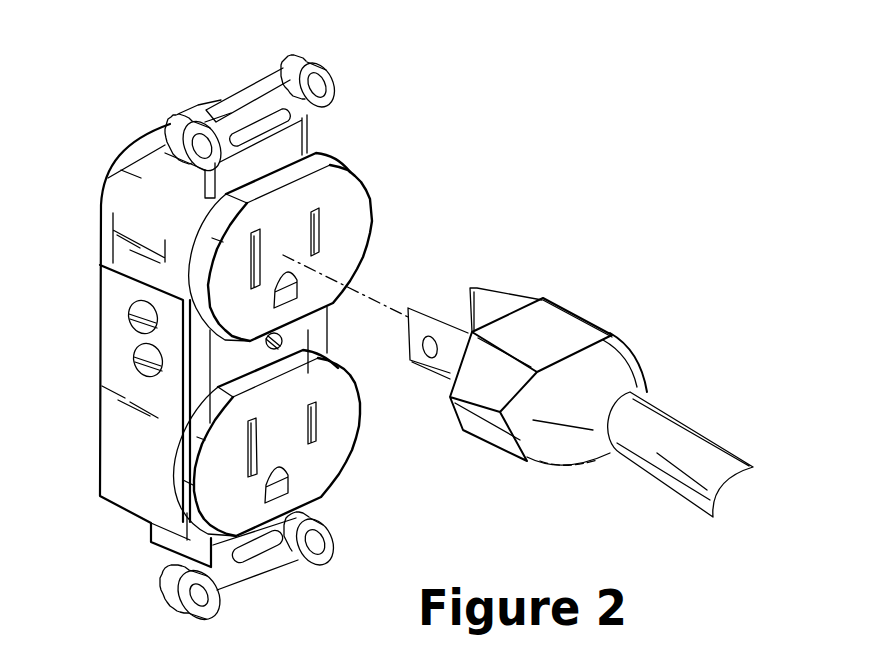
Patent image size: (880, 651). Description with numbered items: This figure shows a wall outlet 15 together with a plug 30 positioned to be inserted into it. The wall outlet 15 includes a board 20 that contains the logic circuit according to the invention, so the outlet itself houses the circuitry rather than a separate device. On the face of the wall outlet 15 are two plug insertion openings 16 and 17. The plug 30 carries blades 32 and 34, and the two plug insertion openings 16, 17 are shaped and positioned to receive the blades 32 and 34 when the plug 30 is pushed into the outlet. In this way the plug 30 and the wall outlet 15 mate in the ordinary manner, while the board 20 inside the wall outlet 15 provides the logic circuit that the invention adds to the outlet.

The wall outlet 15 is at (393, 102).
The plug insertion opening 16 is at (320, 223).
The plug insertion opening 17 is at (263, 237).
The board 20 is at (127, 477).
The plug 30 is at (614, 306).
The blade 32 is at (497, 297).
The blade 34 is at (433, 312).